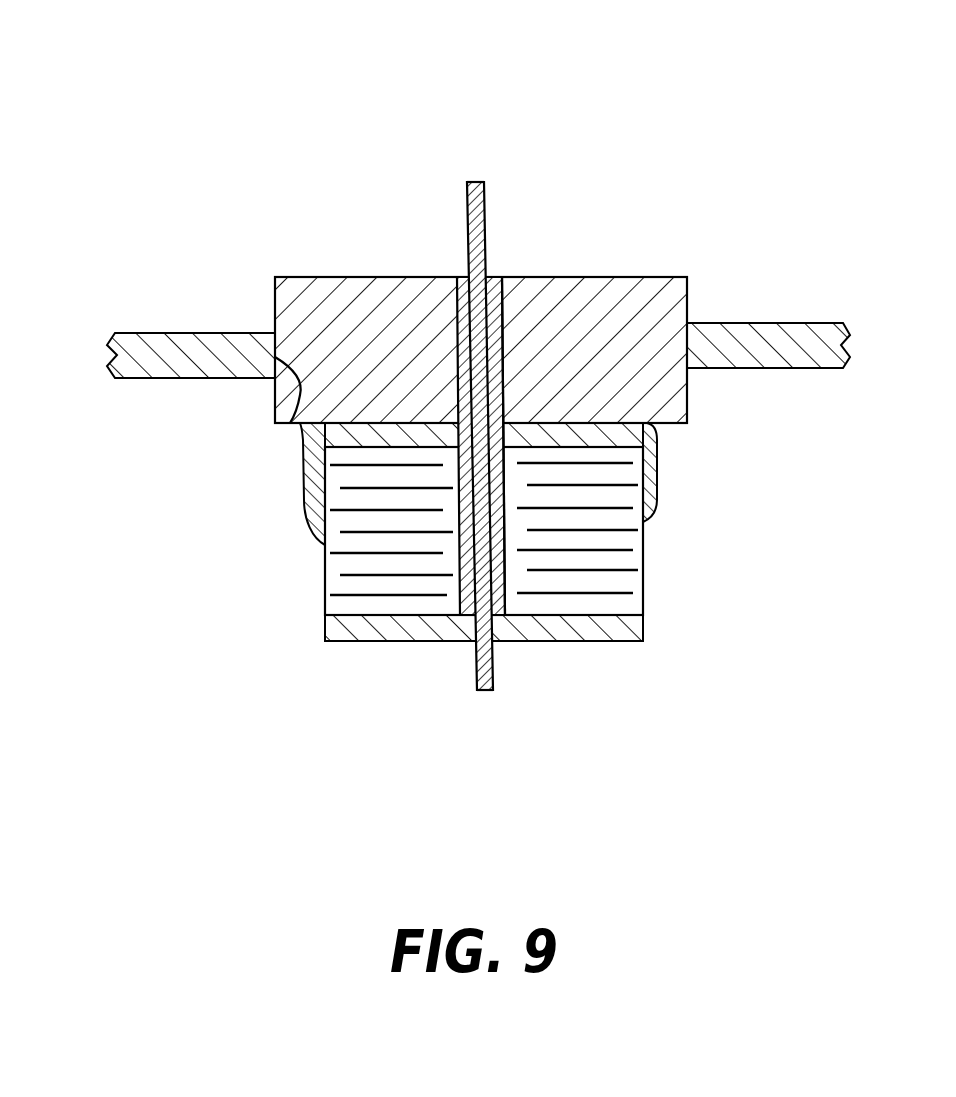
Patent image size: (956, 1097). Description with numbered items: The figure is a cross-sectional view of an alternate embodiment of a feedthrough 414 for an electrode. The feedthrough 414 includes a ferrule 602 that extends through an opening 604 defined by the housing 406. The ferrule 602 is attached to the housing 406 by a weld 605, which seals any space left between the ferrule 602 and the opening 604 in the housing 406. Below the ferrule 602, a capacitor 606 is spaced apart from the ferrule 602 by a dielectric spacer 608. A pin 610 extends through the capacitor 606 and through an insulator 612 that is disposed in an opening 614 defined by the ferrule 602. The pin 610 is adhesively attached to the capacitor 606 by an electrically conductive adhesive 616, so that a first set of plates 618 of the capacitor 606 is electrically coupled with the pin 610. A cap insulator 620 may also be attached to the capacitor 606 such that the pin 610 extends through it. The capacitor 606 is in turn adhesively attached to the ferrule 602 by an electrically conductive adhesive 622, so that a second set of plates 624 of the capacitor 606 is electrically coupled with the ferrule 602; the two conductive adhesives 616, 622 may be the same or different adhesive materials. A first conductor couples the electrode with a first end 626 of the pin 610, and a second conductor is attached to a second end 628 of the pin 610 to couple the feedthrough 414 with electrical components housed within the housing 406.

The feedthrough 414 is at (270, 108).
The housing 406 is at (146, 340).
The ferrule 602 is at (345, 298).
The weld 605 is at (275, 333).
The opening 604 is at (298, 424).
The capacitor 606 is at (333, 542).
The dielectric spacer 608 is at (307, 463).
The pin 610 is at (462, 276).
The insulator 612 is at (467, 190).
The opening 614 is at (498, 276).
The electrically conductive adhesive 616 is at (484, 632).
The first set of plates 618 is at (390, 600).
The cap insulator 620 is at (587, 628).
The electrically conductive adhesive 622 is at (655, 480).
The second set of plates 624 is at (607, 508).
The first end 626 is at (475, 182).
The second end 628 is at (483, 693).